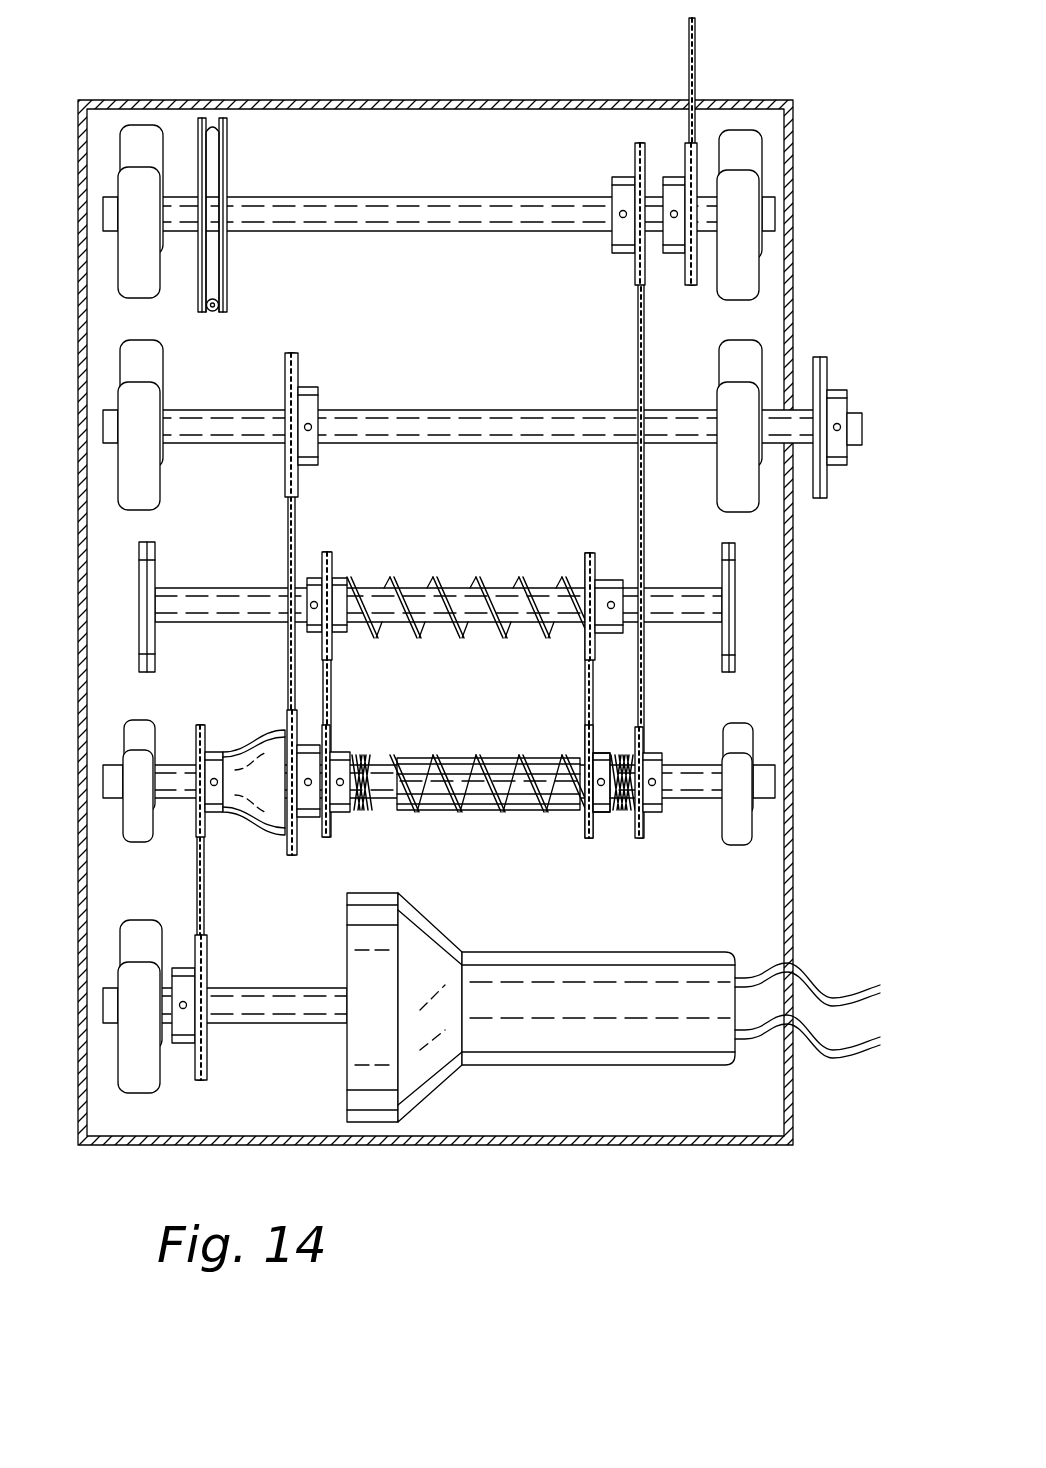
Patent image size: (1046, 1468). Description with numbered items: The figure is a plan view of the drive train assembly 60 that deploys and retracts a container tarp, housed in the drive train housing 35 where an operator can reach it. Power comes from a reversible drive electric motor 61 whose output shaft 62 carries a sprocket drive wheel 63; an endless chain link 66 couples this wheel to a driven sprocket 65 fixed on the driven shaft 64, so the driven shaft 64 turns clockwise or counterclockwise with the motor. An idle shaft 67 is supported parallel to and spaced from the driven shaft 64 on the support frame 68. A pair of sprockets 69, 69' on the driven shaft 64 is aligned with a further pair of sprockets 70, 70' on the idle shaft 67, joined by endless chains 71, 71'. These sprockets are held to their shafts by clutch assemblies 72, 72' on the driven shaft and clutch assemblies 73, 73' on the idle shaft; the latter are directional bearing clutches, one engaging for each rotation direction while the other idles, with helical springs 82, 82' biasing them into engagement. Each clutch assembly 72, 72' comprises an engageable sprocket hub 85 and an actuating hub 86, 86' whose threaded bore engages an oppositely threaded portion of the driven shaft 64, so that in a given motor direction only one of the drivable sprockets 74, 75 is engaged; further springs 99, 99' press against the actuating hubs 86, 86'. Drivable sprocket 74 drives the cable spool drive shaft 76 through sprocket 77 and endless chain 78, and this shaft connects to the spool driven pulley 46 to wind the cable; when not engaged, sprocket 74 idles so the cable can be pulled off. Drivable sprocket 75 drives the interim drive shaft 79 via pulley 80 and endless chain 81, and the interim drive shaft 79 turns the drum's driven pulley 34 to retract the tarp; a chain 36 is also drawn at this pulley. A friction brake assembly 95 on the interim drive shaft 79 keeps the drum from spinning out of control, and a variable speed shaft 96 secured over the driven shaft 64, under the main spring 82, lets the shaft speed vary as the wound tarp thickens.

The driven pulley 34 is at (697, 150).
The drive train housing 35 is at (537, 1150).
The chain 36 is at (689, 66).
The spool driven pulley 46 is at (820, 375).
The drive train assembly 60 is at (626, 1183).
The reversible drive electric motor 61 is at (586, 968).
The output shaft 62 is at (292, 1010).
The sprocket drive wheel 63 is at (208, 958).
The driven shaft 64 is at (702, 796).
The driven sprocket 65 is at (200, 740).
The endless chain link 66 is at (198, 900).
The idle shaft 67 is at (680, 600).
The support frame 68 is at (752, 355).
The sprocket 69 is at (348, 756).
The sprocket 69' is at (562, 767).
The sprocket 70 is at (342, 560).
The sprocket 70' is at (577, 574).
The endless chain 71 is at (361, 694).
The endless chain 71' is at (562, 695).
The clutch assembly 72 is at (305, 819).
The clutch assembly 72' is at (614, 814).
The clutch assembly 73 is at (361, 597).
The clutch assembly 73' is at (600, 569).
The drivable sprocket 74 is at (290, 720).
The drivable sprocket 75 is at (646, 825).
The cable spool drive shaft 76 is at (428, 420).
The sprocket 77 is at (298, 372).
The endless chain 78 is at (288, 523).
The interim drive shaft 79 is at (465, 212).
The pulley 80 is at (612, 160).
The endless chain 81 is at (638, 372).
The helical spring 82 is at (467, 580).
The helical spring 82' is at (487, 757).
The engageable sprocket hub 85 is at (262, 760).
The actuating hub 86 is at (361, 811).
The actuating hub 86' is at (577, 802).
The friction brake assembly 95 is at (240, 165).
The variable speed shaft 96 is at (500, 772).
The spring 99 is at (373, 756).
The spring 99' is at (618, 755).